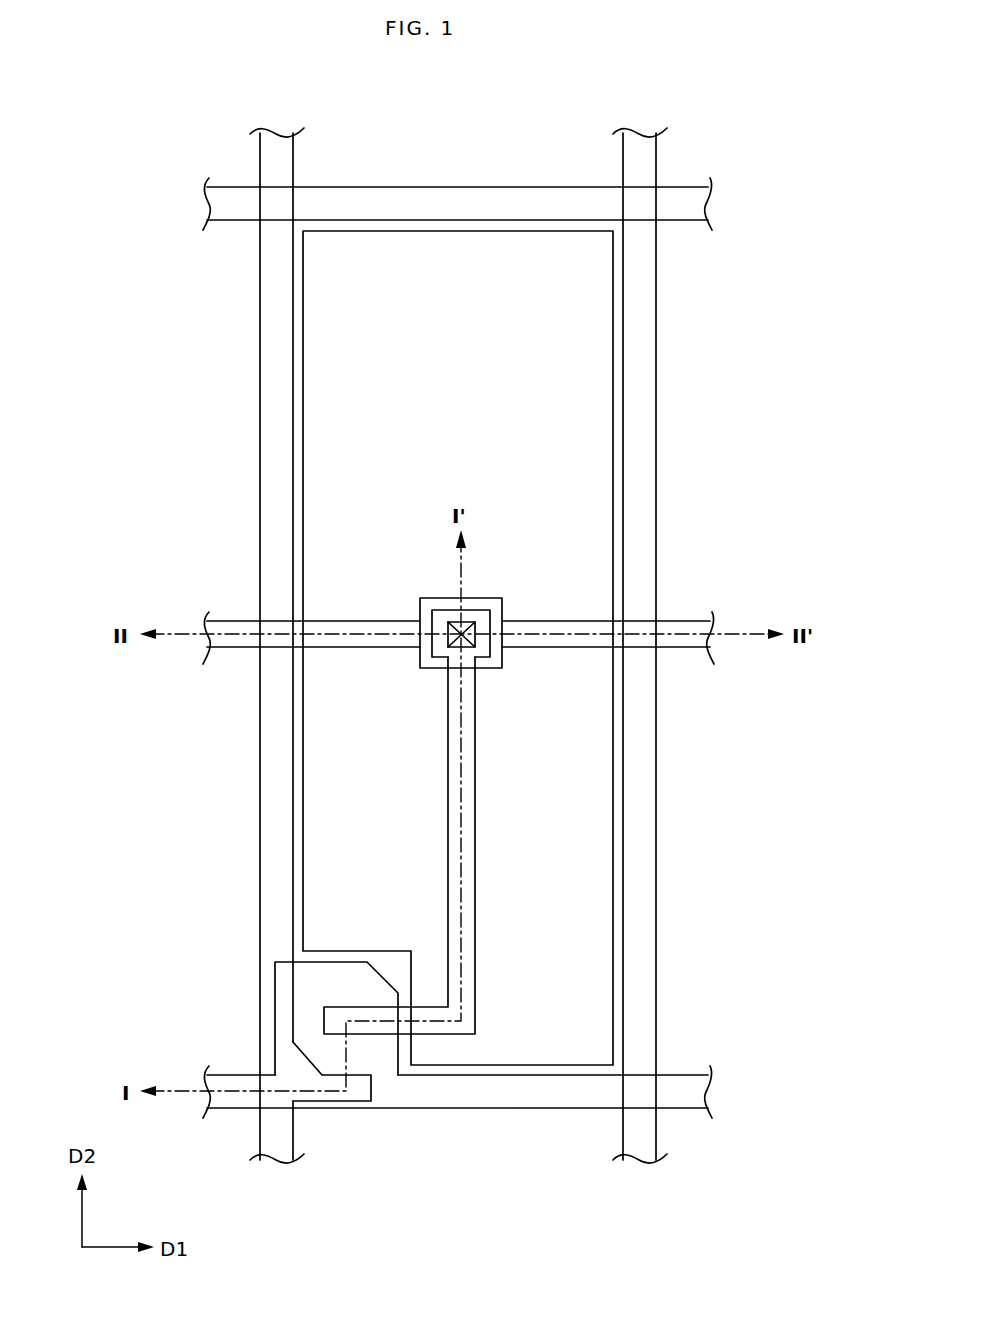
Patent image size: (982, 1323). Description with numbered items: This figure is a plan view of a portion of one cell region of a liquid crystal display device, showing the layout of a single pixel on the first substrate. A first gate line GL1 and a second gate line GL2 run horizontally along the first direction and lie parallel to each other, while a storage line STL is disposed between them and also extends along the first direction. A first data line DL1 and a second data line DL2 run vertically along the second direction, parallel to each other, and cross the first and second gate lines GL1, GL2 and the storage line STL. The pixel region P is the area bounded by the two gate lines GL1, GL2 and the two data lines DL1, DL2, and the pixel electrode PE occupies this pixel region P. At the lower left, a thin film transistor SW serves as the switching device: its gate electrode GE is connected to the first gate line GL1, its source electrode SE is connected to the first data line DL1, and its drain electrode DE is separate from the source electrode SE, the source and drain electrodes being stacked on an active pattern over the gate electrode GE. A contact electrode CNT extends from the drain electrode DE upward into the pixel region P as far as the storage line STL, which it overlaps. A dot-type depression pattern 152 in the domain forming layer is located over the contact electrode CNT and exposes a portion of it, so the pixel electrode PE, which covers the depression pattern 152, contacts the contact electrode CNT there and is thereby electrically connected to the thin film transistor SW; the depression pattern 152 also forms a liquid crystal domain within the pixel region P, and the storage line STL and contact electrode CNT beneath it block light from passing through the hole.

The first gate line GL1 is at (570, 1108).
The second gate line GL2 is at (457, 197).
The first data line DL1 is at (266, 973).
The second data line DL2 is at (643, 975).
The storage line STL is at (233, 632).
The pixel electrode PE is at (592, 827).
The pixel region P is at (466, 328).
The depression pattern 152 is at (510, 622).
The contact electrode CNT is at (502, 653).
The thin film transistor SW is at (375, 962).
The source electrode SE is at (332, 1128).
The gate electrode GE is at (396, 1108).
The drain electrode DE is at (441, 1027).